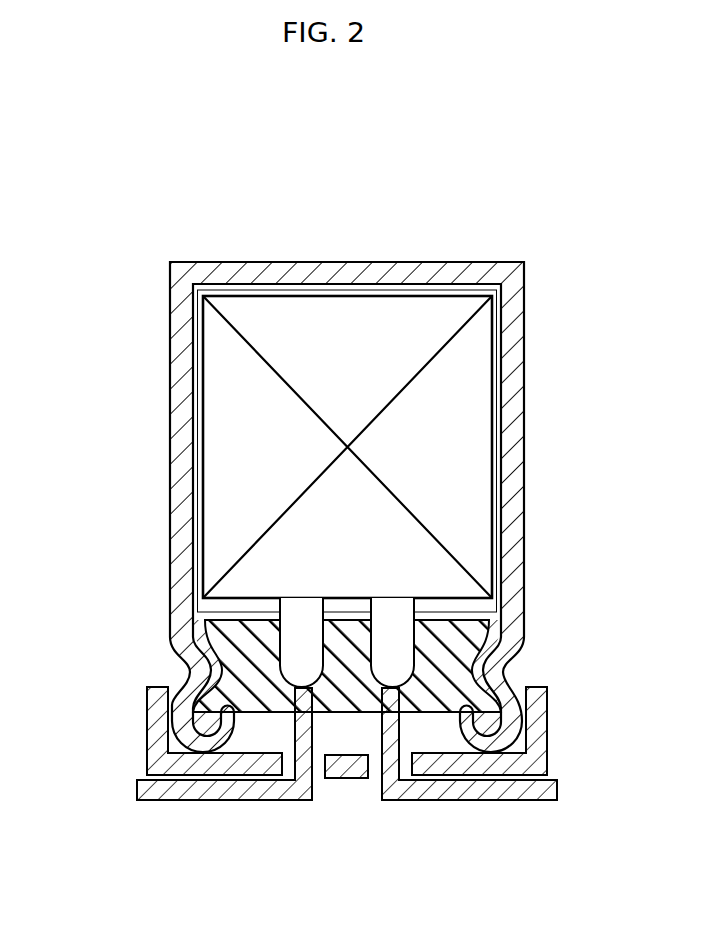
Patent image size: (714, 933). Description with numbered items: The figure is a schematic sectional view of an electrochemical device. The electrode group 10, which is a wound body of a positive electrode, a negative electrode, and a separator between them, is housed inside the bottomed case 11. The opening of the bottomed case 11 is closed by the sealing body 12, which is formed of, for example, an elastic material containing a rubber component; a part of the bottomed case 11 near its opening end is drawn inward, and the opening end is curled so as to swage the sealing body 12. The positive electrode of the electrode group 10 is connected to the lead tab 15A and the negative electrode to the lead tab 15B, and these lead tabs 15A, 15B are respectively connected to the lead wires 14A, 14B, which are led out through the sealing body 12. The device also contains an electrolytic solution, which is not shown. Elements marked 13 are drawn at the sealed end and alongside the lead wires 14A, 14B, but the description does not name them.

The electrode group 10 is at (240, 464).
The bottomed case 11 is at (512, 478).
The sealing body 12 is at (455, 660).
The holding member 13 is at (156, 745).
The lead wire 14A is at (220, 798).
The lead wire 14B is at (478, 798).
The lead tab 15A is at (303, 661).
The lead tab 15B is at (387, 628).